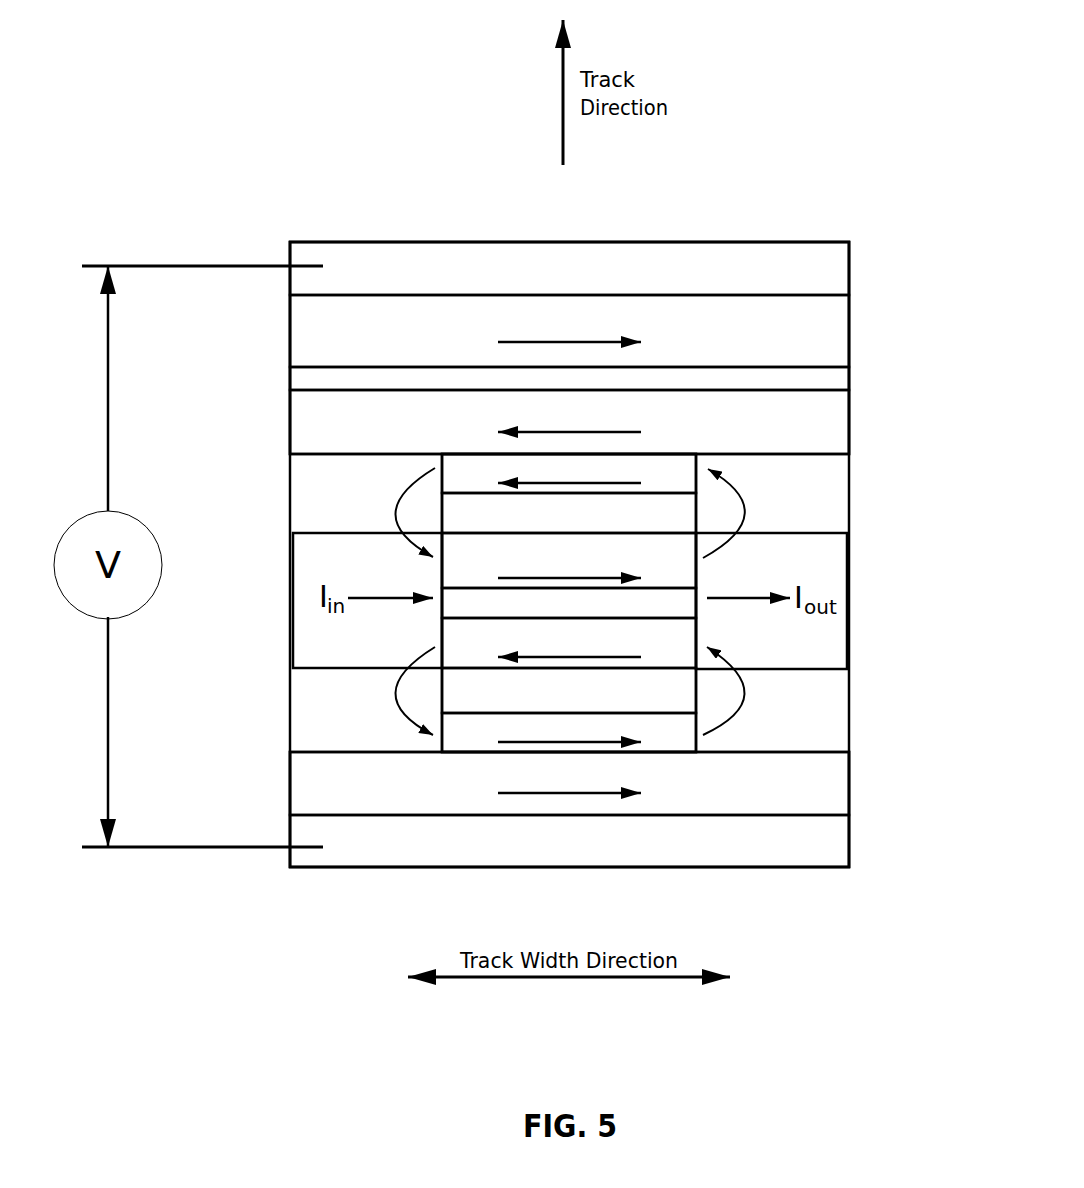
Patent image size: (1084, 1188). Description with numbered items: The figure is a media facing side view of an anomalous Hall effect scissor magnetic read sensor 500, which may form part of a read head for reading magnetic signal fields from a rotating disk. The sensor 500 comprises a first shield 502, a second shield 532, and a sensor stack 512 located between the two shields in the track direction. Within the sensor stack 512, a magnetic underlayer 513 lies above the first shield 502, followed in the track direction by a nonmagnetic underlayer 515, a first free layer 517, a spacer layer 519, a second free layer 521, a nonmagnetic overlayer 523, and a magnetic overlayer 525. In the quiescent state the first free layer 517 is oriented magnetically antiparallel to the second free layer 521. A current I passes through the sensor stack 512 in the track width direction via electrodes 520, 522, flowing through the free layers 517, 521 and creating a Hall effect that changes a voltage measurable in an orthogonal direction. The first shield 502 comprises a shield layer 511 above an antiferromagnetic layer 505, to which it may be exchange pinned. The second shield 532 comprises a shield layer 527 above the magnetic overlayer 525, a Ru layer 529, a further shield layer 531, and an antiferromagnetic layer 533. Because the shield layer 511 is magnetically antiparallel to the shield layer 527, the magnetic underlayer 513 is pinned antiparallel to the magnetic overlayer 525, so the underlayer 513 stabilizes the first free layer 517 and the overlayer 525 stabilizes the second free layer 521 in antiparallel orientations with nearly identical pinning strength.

The sensor 500 is at (330, 903).
The first shield 502 is at (288, 753).
The antiferromagnetic layer 505 is at (787, 867).
The S1A layer 511 is at (775, 752).
The sensor stack 512 is at (288, 456).
The magnetic underlayer 513 is at (569, 732).
The nonmagnetic underlayer 515 is at (569, 690).
The first free layer 517 is at (569, 643).
The spacer layer 519 is at (569, 603).
The first electrical lead (current input) 520 is at (352, 533).
The second free layer 521 is at (569, 560).
The electrode 522 is at (822, 533).
The nonmagnetic overlayer 523 is at (569, 513).
The magnetic overlayer 525 is at (569, 473).
The S2A layer 527 is at (822, 454).
The Ru layer 529 is at (849, 380).
The S2B layer 531 is at (849, 313).
The second shield 532 is at (288, 242).
The antiferromagnetic layer 533 is at (833, 242).